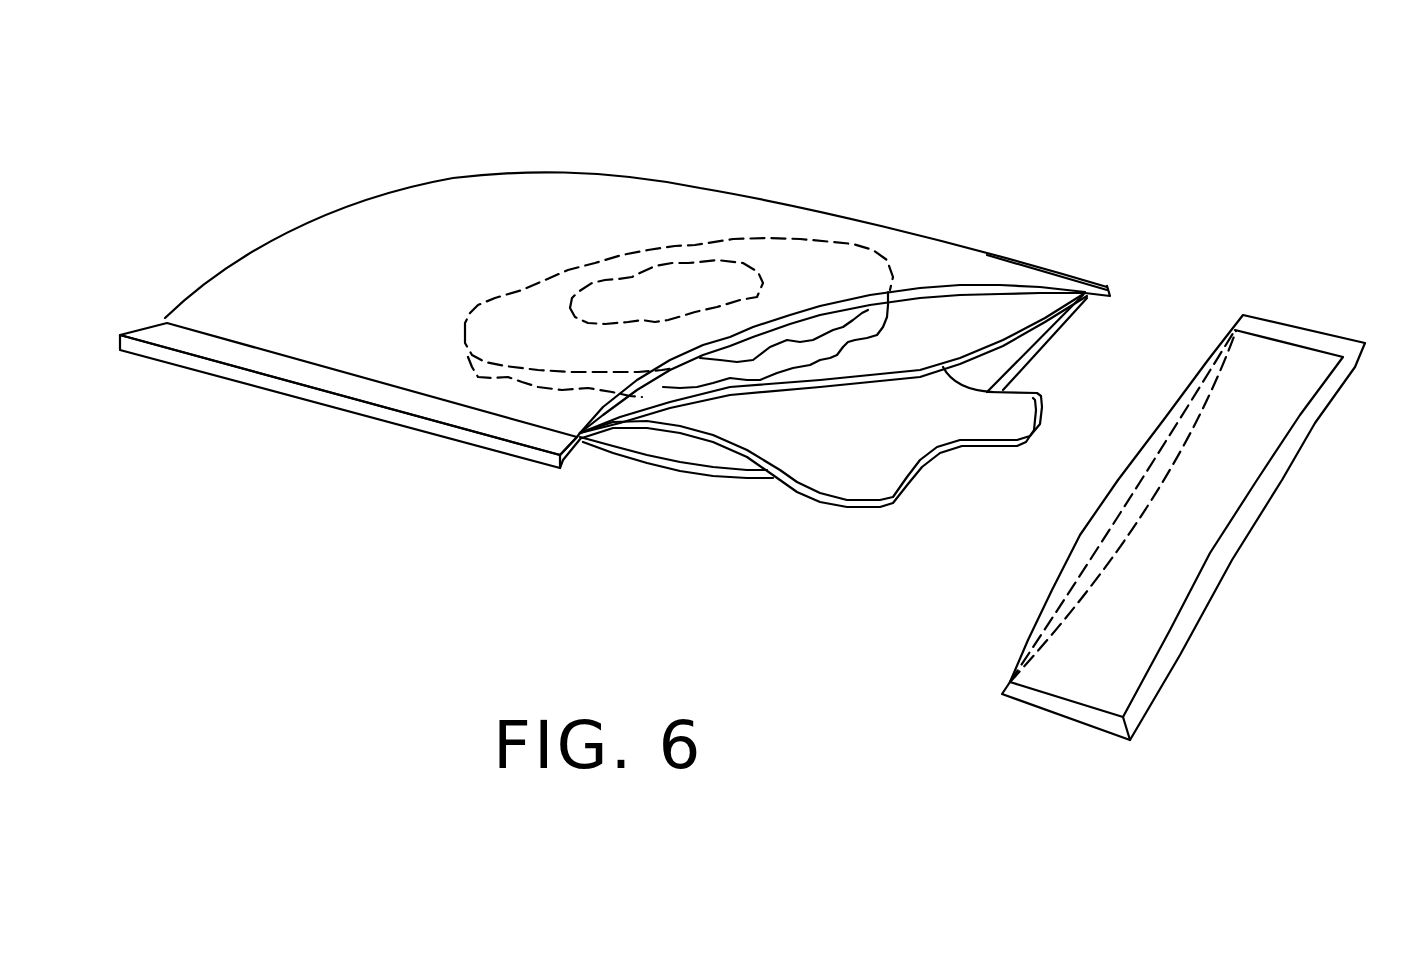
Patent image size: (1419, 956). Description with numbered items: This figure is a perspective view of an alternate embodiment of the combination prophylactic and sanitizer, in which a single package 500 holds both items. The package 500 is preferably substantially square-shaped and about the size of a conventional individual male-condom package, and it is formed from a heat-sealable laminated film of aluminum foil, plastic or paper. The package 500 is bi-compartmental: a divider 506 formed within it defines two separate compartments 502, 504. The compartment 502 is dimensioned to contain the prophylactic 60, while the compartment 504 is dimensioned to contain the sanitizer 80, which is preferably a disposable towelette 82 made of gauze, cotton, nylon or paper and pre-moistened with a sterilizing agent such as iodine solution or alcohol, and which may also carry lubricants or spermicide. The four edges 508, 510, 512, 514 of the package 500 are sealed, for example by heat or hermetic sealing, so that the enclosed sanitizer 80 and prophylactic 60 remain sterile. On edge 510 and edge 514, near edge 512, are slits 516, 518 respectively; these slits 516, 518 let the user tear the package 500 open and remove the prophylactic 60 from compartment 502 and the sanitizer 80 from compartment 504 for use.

The package 500 is at (420, 213).
The edge 508 is at (160, 322).
The edge 514 is at (232, 360).
The slit 518 is at (562, 468).
The edge 510 is at (1073, 290).
The slit 516 is at (1113, 290).
The compartment 502 is at (930, 317).
The divider 506 is at (612, 427).
The compartment 504 is at (677, 450).
The sanitizer 80 is at (838, 468).
The towelette 82 is at (907, 452).
The prophylactic 60 is at (780, 257).
The edge 512 is at (1263, 482).